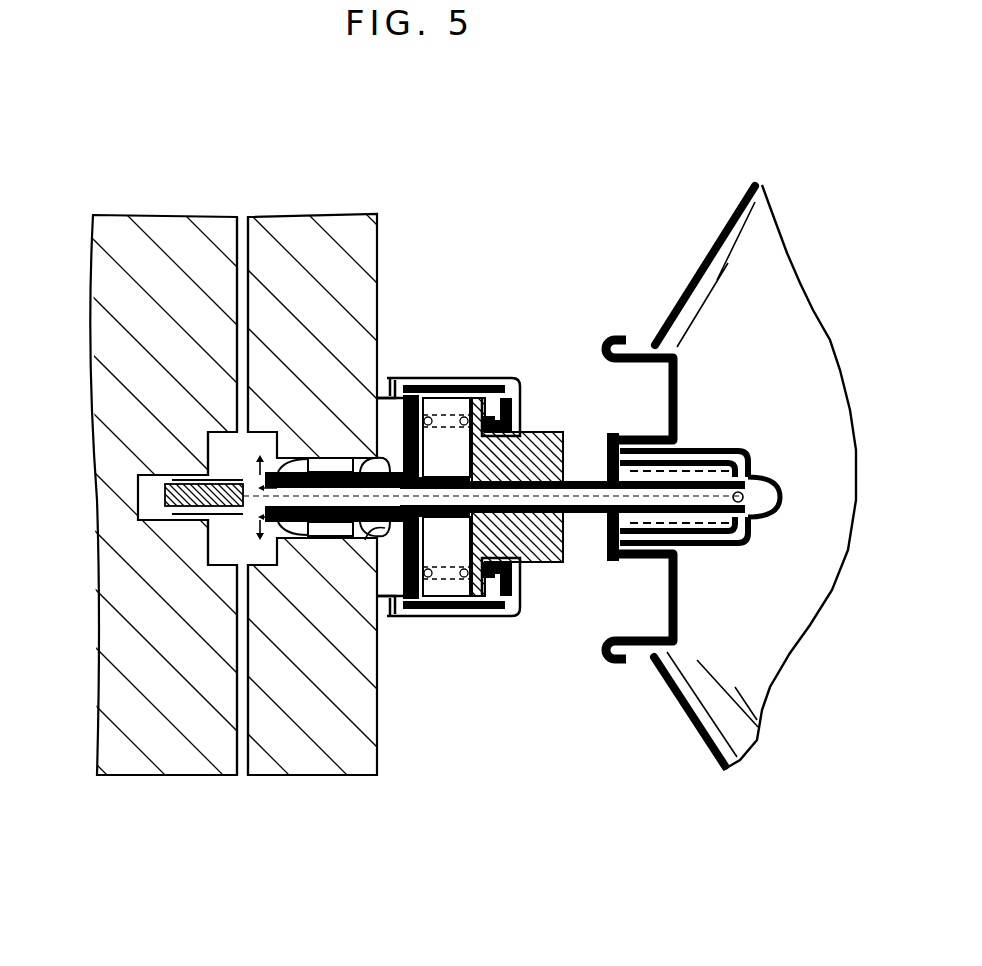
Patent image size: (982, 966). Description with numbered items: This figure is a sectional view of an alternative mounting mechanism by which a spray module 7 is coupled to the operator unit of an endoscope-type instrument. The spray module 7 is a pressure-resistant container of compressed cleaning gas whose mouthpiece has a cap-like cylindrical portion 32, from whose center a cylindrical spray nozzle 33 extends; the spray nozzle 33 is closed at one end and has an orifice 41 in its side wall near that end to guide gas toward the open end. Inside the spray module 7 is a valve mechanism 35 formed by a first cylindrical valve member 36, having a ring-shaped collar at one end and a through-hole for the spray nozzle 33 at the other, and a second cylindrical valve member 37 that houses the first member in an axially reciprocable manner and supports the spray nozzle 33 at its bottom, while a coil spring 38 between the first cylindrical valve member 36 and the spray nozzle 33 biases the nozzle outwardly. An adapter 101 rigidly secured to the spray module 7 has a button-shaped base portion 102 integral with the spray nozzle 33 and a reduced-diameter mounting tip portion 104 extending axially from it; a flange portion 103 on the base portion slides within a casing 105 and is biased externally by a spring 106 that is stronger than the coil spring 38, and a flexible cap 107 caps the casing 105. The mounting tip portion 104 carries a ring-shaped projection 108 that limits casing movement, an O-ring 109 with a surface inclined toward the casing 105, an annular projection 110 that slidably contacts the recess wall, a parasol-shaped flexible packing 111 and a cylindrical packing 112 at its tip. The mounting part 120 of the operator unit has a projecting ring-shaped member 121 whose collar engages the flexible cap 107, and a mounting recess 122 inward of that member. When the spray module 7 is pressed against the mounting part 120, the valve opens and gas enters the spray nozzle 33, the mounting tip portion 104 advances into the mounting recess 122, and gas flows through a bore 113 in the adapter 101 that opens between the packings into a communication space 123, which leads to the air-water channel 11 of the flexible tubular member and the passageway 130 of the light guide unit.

The spray module 7 is at (700, 253).
The air-water channel 11 is at (237, 746).
The cylindrical portion 32 is at (632, 432).
The spray nozzle 33 is at (585, 520).
The valve mechanism 35 is at (750, 543).
The first cylindrical valve member 36 is at (703, 463).
The second cylindrical valve member 37 is at (740, 447).
The coil spring 38 is at (697, 522).
The orifice 41 is at (770, 498).
The adapter 101 is at (446, 628).
The button-shaped base portion 102 is at (530, 564).
The flange portion 103 is at (473, 602).
The mounting tip portion 104 is at (330, 523).
The casing 105 is at (443, 381).
The spring 106 is at (472, 368).
The flexible cap 107 is at (425, 380).
The ring-shaped projection 108 is at (385, 600).
The O-ring 109 is at (370, 560).
The annular projection 110 is at (363, 457).
The flexible packing 111 is at (293, 460).
The cylindrical packing 112 is at (213, 456).
The bore 113 is at (530, 499).
The mounting part 120 is at (360, 262).
The ring-shaped member 121 is at (383, 402).
The mounting recess 122 is at (330, 467).
The communication space 123 is at (215, 545).
The passageway 130 is at (243, 263).